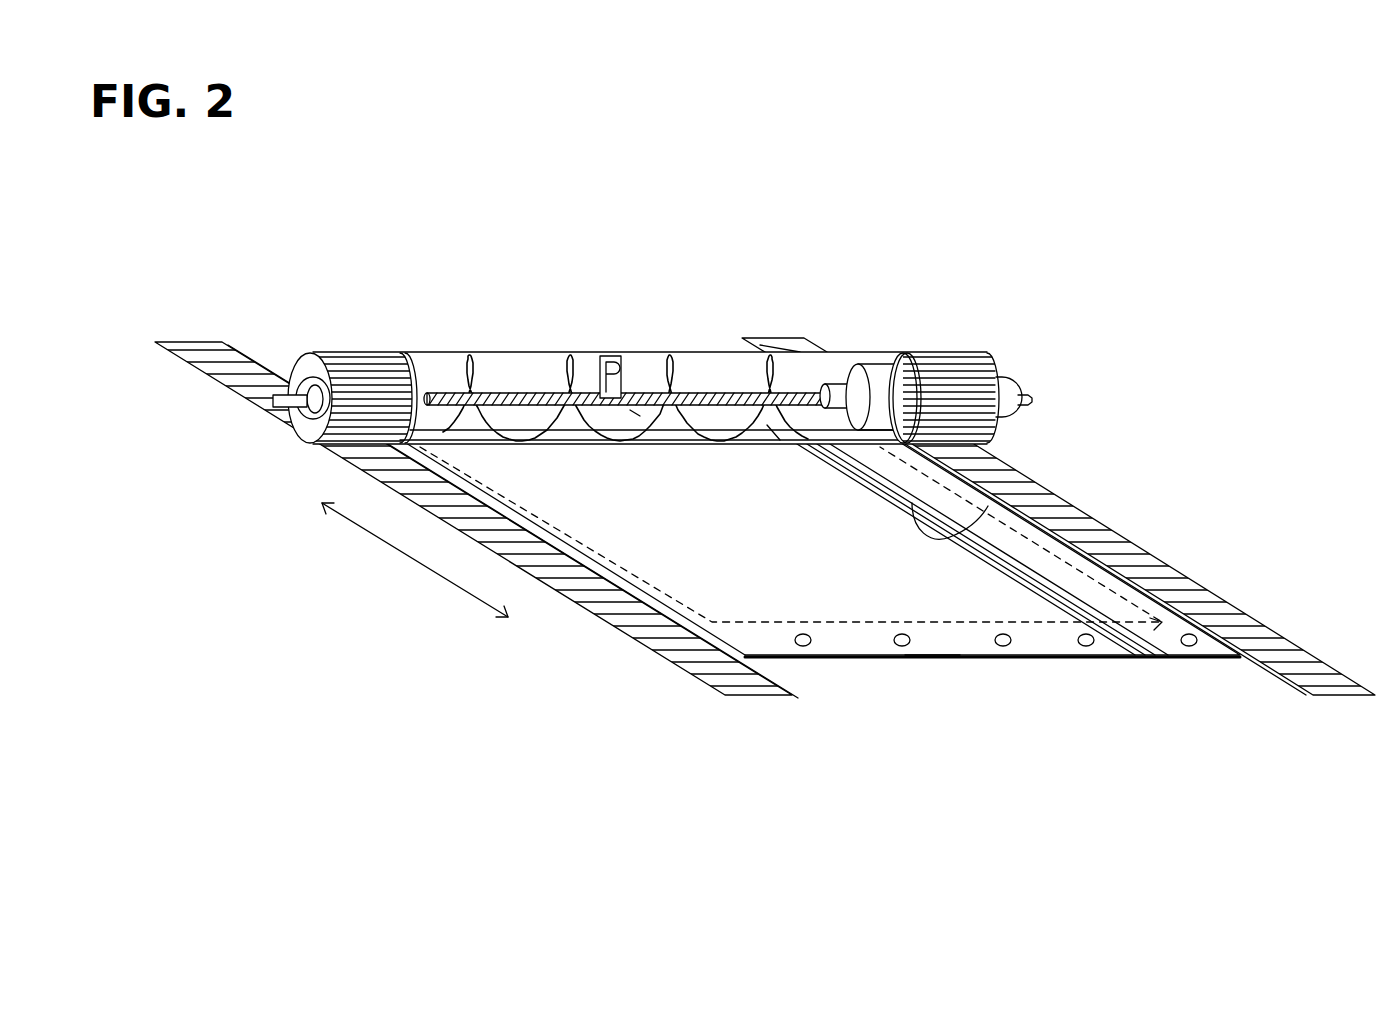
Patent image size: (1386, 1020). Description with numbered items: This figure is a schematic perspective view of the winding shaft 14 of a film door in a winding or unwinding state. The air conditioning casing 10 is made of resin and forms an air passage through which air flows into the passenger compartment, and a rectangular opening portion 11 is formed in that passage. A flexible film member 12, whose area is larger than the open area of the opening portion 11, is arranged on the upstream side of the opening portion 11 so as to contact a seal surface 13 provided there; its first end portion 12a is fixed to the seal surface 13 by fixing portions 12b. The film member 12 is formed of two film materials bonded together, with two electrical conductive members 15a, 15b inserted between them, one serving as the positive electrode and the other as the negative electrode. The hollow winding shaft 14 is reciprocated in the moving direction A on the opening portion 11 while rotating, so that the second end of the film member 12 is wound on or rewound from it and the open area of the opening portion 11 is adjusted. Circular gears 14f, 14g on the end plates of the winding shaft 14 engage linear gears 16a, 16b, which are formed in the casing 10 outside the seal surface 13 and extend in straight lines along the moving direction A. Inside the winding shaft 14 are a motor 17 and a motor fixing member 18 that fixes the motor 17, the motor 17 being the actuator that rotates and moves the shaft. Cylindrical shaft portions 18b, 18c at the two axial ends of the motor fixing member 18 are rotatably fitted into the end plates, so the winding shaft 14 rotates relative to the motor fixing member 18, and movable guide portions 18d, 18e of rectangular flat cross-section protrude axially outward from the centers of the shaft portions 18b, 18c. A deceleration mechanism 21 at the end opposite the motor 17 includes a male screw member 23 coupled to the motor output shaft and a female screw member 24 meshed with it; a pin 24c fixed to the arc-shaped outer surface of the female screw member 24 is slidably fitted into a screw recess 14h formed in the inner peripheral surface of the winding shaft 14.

The air conditioning casing 10 is at (1112, 668).
The opening portion 11 is at (848, 623).
The film member 12 is at (1020, 590).
The first end portion 12a is at (932, 657).
The fixing portions 12b is at (1003, 648).
The seal surface 13 is at (1150, 660).
The winding shaft 14 is at (577, 349).
The circular gear 14f is at (945, 352).
The circular gear 14g is at (355, 352).
The screw recess 14h is at (513, 353).
The electrical conductive member 15a is at (923, 492).
The electrical conductive member 15b is at (960, 537).
The linear gear 16a is at (1197, 602).
The linear gear 16b is at (680, 655).
The motor 17 is at (877, 372).
The motor fixing member 18 is at (767, 425).
The cylindrical shaft portion 18b is at (997, 380).
The cylindrical shaft portion 18c is at (317, 380).
The movable guide portion 18d is at (1018, 395).
The movable guide portion 18e is at (277, 402).
The deceleration mechanism 21 is at (637, 413).
The male screw member 23 is at (693, 383).
The female screw member 24 is at (651, 353).
The pin 24c is at (614, 355).
The moving direction A is at (430, 569).